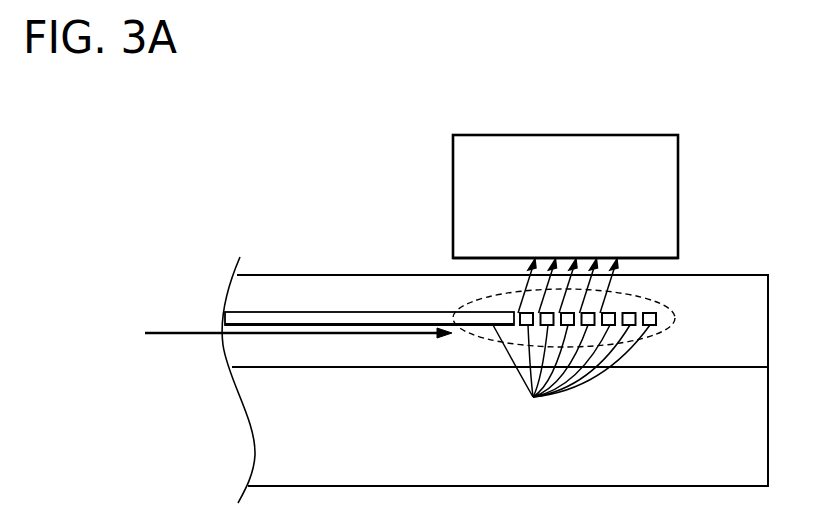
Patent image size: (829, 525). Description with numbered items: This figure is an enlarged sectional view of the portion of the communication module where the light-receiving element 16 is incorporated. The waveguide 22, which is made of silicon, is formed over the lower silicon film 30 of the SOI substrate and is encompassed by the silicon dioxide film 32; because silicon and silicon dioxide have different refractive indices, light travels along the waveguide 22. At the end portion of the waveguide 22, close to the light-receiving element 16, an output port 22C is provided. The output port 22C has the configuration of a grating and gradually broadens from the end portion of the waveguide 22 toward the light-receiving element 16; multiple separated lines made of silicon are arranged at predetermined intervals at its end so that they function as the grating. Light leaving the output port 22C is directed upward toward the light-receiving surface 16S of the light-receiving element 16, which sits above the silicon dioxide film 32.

The light-receiving element 16 is at (587, 135).
The light-receiving surface 16S is at (453, 135).
The waveguide 22 is at (273, 312).
The output port 22C is at (564, 361).
The silicon dioxide film 32 is at (720, 283).
The lower silicon film 30 is at (727, 473).